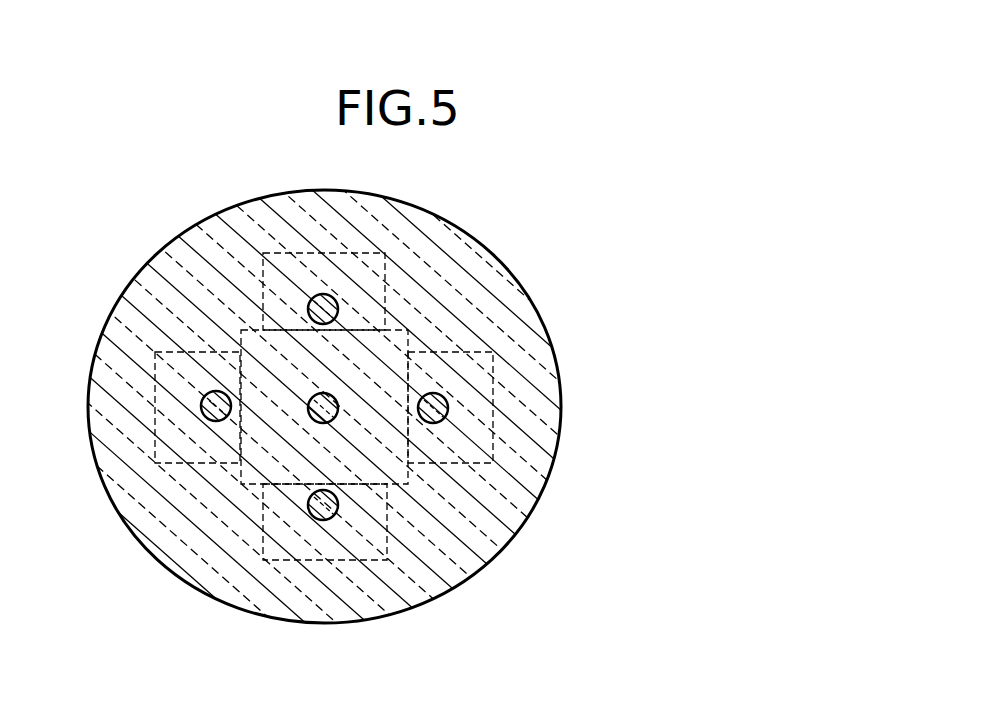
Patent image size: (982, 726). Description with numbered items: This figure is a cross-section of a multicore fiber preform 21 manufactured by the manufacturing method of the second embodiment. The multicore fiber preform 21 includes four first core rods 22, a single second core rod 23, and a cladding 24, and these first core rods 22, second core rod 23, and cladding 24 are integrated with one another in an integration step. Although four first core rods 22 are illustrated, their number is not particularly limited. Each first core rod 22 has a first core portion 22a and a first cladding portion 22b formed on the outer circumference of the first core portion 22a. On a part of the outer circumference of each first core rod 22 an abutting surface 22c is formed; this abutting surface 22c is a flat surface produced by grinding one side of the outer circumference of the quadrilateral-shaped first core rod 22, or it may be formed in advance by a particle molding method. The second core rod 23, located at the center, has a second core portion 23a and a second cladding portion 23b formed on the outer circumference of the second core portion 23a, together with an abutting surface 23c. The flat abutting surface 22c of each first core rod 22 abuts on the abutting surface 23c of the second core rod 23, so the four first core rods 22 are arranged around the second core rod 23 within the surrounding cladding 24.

The multicore fiber preform 21 is at (580, 211).
The cladding 24 is at (533, 303).
The first core rod 22 is at (667, 340).
The first core portion 22a is at (420, 395).
The first cladding portion 22b is at (447, 421).
The abutting surface 22c is at (390, 431).
The second core rod 23 is at (632, 488).
The second core portion 23a is at (332, 420).
The second cladding portion 23b is at (332, 420).
The abutting surface 23c is at (505, 484).